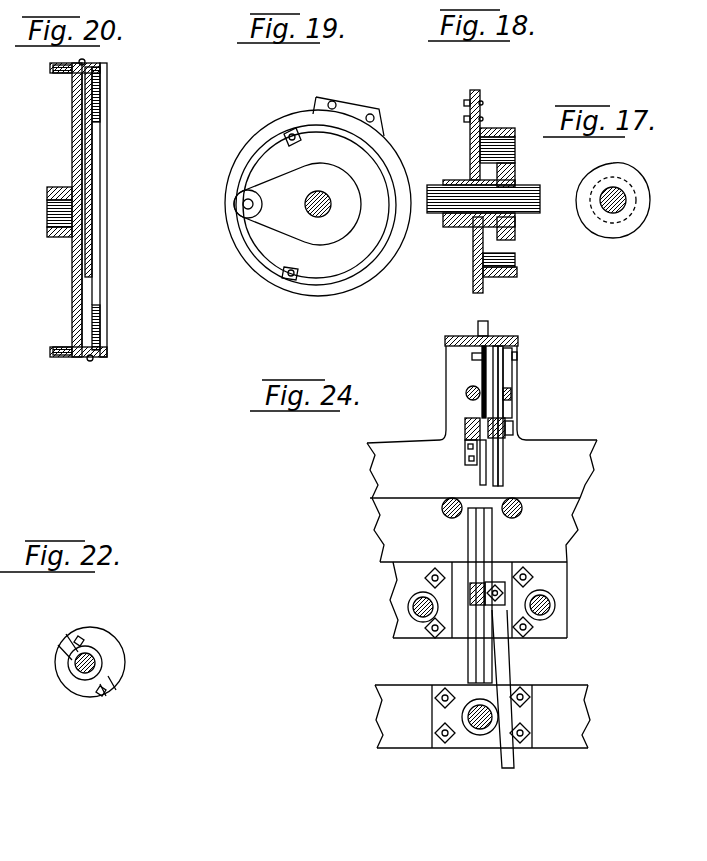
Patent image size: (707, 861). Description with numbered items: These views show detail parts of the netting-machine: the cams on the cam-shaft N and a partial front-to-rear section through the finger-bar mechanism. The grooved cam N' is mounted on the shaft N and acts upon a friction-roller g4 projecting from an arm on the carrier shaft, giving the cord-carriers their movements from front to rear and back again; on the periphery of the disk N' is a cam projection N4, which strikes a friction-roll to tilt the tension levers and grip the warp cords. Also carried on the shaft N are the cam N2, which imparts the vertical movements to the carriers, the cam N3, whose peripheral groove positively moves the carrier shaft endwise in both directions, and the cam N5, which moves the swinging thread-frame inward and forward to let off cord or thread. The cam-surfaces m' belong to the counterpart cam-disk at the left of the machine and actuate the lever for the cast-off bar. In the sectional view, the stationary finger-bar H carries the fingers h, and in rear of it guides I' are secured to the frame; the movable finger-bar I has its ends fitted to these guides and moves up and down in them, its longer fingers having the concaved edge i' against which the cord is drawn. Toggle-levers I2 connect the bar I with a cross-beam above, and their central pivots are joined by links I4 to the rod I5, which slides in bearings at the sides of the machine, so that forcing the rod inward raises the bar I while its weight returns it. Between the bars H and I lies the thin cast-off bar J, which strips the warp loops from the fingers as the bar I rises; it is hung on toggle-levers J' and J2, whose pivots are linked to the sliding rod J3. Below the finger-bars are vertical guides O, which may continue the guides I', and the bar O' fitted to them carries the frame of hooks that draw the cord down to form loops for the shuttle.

In FIG. 19, the shaft N is at (297, 209).
In FIG. 18, the shaft N is at (489, 209).
In FIG. 17, the shaft N is at (637, 207).
In FIG. 22, the shaft N is at (55, 670).
In FIG. 19, the grooved cam N' is at (318, 213).
In FIG. 18, the grooved cam N' is at (490, 202).
In FIG. 20, the cam N2 is at (76, 300).
In FIG. 17, the cam N2 is at (618, 232).
In FIG. 20, the cam N3 is at (99, 173).
In FIG. 19, the cam projection N4 is at (381, 120).
In FIG. 18, the cam projection N4 is at (478, 88).
In FIG. 22, the cam N5 is at (124, 652).
In FIG. 20, the cam-surfaces m' is at (59, 212).
In FIG. 19, the friction-roller g4 is at (236, 217).
In FIG. 24, the stationary finger-bar H is at (480, 414).
In FIG. 24, the movable finger-bar I is at (497, 441).
In FIG. 24, the guides I' is at (495, 327).
In FIG. 24, the toggle-levers I2 is at (512, 403).
In FIG. 24, the links I4 is at (514, 368).
In FIG. 24, the rod I5 is at (512, 394).
In FIG. 24, the cast-off bar J is at (453, 452).
In FIG. 24, the toggle-lever J' is at (451, 382).
In FIG. 24, the toggle-lever J2 is at (472, 357).
In FIG. 24, the rod J3 is at (473, 387).
In FIG. 24, the fingers h is at (480, 474).
In FIG. 24, the concavity i' is at (507, 417).
In FIG. 24, the vertical guides O is at (467, 595).
In FIG. 24, the bar O' is at (479, 609).